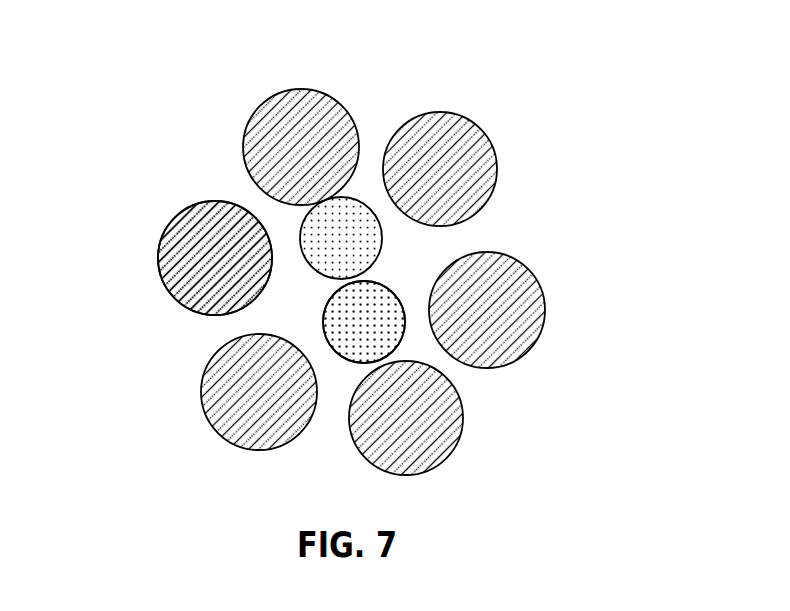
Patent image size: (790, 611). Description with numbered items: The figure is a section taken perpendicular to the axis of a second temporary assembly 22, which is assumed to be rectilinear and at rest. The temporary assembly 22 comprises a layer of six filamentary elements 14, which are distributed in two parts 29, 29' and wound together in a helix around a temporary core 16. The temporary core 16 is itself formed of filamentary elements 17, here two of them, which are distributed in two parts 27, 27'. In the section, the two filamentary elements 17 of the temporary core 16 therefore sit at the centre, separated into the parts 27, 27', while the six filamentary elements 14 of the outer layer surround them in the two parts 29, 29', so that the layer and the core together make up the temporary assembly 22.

The filamentary elements 14 is at (164, 283).
The temporary core 16 is at (412, 269).
The filamentary elements 17 is at (342, 358).
The temporary assembly 22 is at (380, 298).
The part 27 is at (325, 255).
The part 27' is at (378, 295).
The part 29 is at (248, 242).
The part 29' is at (482, 265).